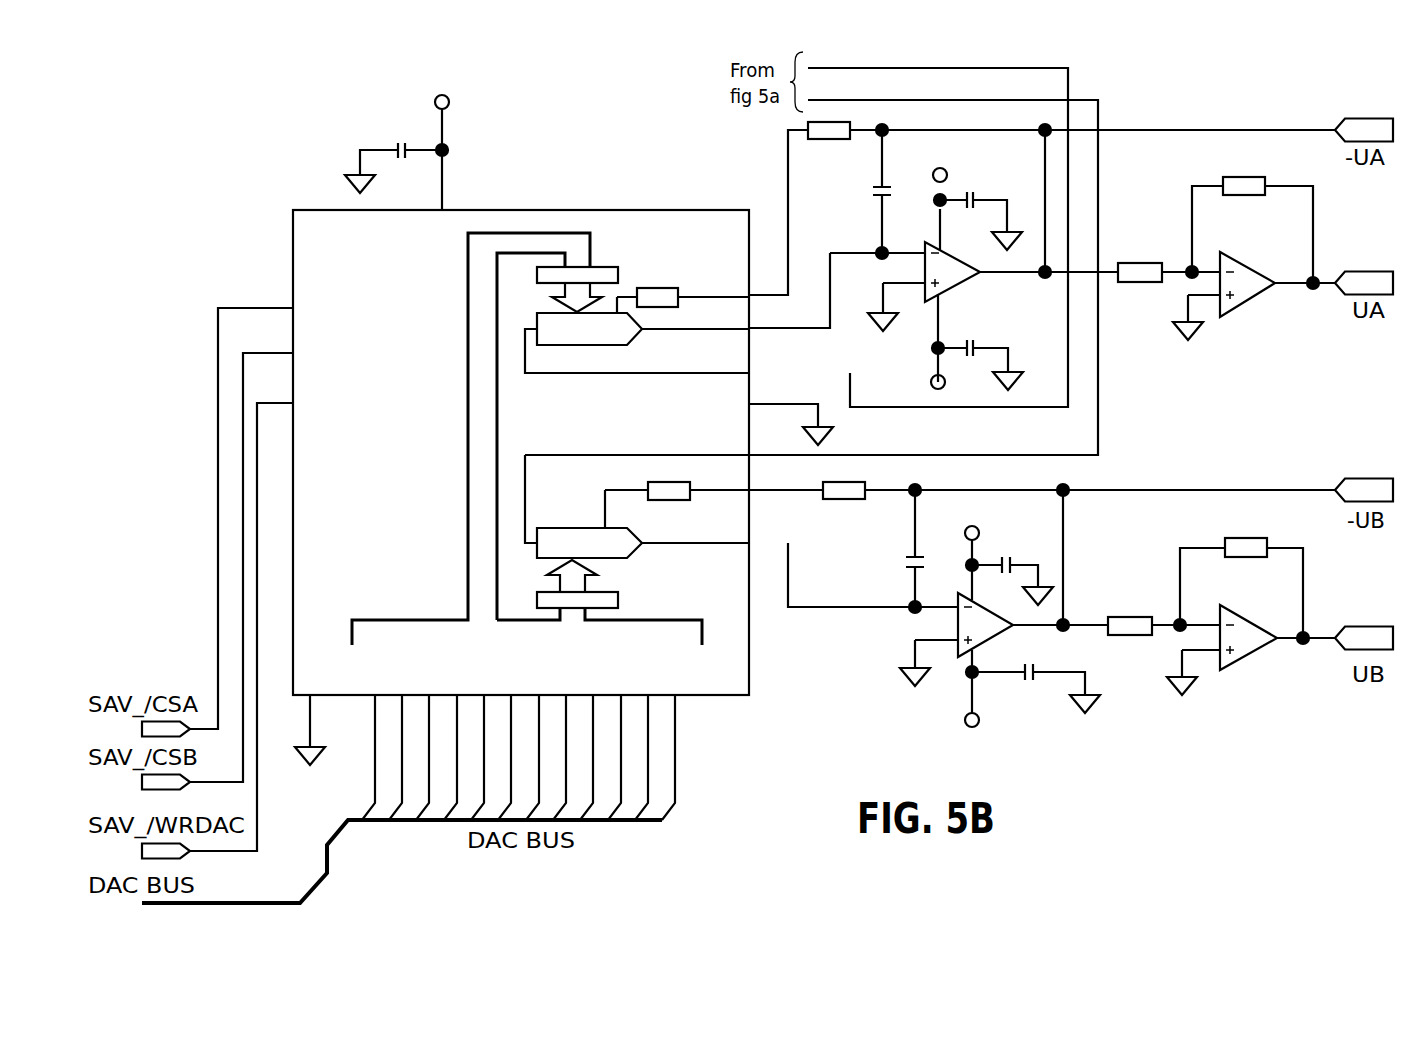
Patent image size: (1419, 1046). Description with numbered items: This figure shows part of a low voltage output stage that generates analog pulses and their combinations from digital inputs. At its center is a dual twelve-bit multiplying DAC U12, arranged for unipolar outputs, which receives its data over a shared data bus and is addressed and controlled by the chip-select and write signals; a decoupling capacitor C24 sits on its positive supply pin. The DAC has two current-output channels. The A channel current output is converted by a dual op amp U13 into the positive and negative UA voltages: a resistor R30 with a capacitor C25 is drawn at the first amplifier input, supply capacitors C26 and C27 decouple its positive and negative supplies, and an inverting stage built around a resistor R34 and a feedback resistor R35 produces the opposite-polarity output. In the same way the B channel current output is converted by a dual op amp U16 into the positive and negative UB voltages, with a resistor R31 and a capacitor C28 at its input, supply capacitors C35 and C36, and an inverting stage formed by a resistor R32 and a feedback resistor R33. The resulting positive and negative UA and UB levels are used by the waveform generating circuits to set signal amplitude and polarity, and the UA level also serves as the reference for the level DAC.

The dual 12-bit multiplying DAC U12 is at (518, 485).
The capacitor .01uF C24 is at (406, 126).
The resistor 10.0 R30 is at (829, 155).
The capacitor 33pF C25 is at (857, 218).
The dual op amp U13 is at (929, 266).
The capacitor .01uF C26 is at (981, 194).
The capacitor .01uF C27 is at (980, 339).
The resistor 10.00K R34 is at (1165, 247).
The resistor 10.00K R35 is at (1252, 207).
The resistor 10.0 R31 is at (842, 514).
The capacitor 33pF C28 is at (884, 575).
The dual op amp U16 is at (921, 629).
The capacitor 0.01uF C35 is at (1012, 553).
The capacitor 0.01uF C36 is at (1036, 698).
The resistor 10.00K R32 is at (1155, 601).
The resistor 10.00K R33 is at (1241, 565).